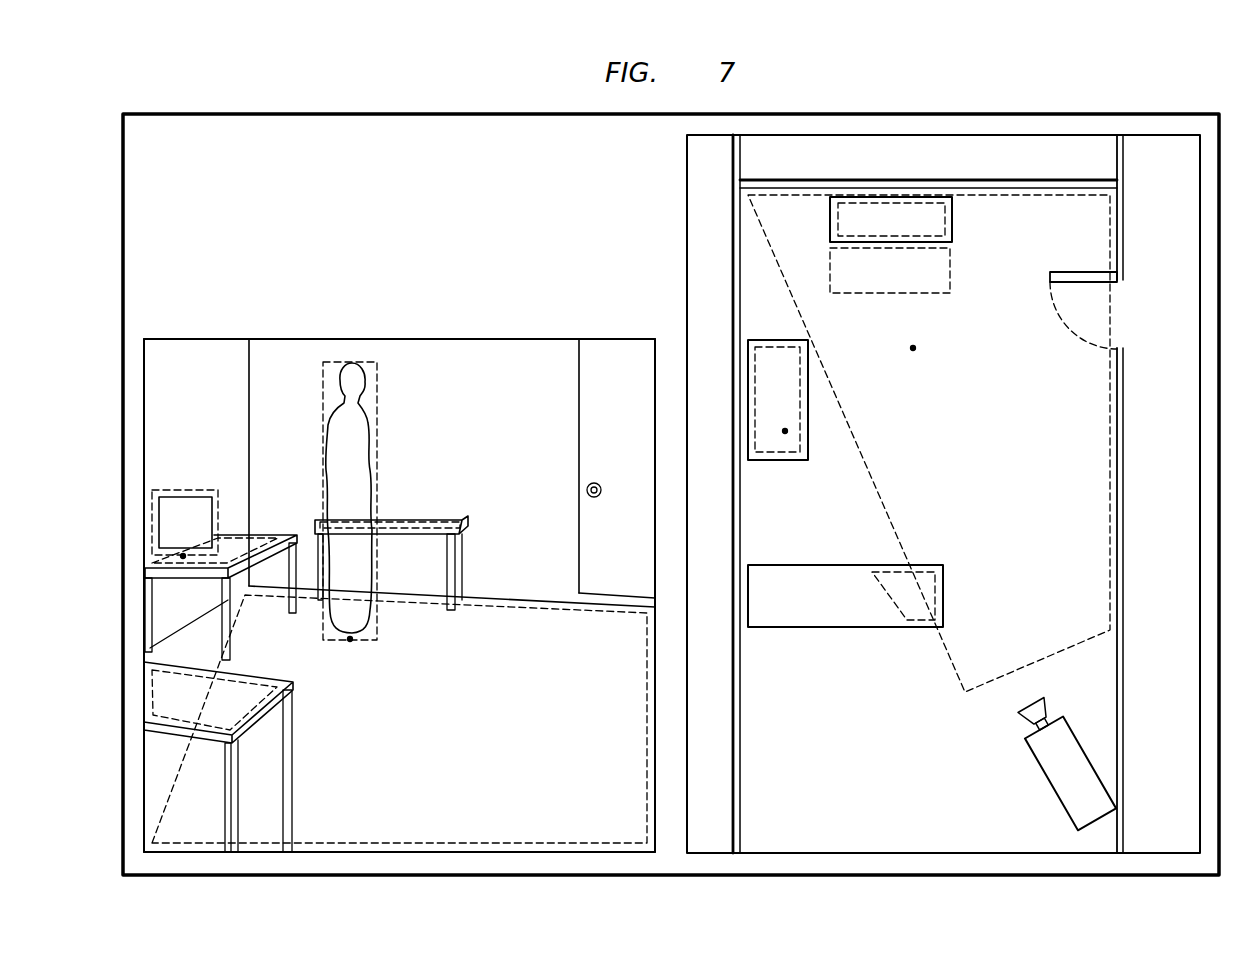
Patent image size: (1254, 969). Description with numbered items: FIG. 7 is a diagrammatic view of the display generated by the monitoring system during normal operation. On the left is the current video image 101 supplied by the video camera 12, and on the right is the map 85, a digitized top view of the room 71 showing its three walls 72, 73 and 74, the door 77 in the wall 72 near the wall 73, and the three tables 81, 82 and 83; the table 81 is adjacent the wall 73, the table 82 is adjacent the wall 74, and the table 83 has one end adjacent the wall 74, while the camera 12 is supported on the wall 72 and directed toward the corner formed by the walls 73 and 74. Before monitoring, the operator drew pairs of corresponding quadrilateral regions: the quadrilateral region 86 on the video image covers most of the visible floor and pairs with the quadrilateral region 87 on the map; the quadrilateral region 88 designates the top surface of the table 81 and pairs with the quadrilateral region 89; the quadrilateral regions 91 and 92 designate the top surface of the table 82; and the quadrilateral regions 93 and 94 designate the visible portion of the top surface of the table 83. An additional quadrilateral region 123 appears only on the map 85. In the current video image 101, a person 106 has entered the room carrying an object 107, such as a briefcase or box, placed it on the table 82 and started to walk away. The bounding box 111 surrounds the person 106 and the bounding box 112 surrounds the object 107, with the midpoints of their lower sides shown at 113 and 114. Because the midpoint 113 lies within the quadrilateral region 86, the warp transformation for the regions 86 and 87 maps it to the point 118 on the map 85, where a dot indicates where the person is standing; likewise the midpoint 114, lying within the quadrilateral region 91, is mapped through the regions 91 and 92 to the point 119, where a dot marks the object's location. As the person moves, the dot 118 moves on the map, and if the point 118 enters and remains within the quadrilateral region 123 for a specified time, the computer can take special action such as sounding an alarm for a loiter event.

The video camera 12 is at (1048, 787).
The room 71 is at (942, 736).
The wall 72 is at (1113, 673).
The wall 73 is at (440, 347).
The wall 74 is at (170, 355).
The door 77 is at (593, 418).
The table 81 is at (403, 537).
The table 82 is at (175, 580).
The table 83 is at (215, 743).
The map 85 is at (687, 273).
The quadrilateral region 86 is at (433, 842).
The quadrilateral region 87 is at (883, 518).
The quadrilateral region 88 is at (427, 520).
The quadrilateral region 89 is at (838, 216).
The quadrilateral region 91 is at (263, 535).
The quadrilateral region 92 is at (775, 347).
The quadrilateral region 93 is at (248, 682).
The quadrilateral region 94 is at (893, 600).
The current video image 101 is at (313, 458).
The person 106 is at (337, 418).
The object 107 is at (200, 495).
The bounding box 111 is at (378, 418).
The bounding box 112 is at (178, 485).
The midpoint 113 is at (350, 643).
The midpoint 114 is at (183, 553).
The point 118 is at (913, 351).
The point 119 is at (785, 434).
The quadrilateral region 123 is at (952, 273).